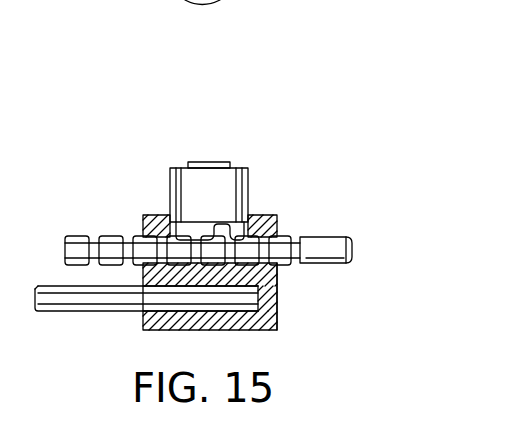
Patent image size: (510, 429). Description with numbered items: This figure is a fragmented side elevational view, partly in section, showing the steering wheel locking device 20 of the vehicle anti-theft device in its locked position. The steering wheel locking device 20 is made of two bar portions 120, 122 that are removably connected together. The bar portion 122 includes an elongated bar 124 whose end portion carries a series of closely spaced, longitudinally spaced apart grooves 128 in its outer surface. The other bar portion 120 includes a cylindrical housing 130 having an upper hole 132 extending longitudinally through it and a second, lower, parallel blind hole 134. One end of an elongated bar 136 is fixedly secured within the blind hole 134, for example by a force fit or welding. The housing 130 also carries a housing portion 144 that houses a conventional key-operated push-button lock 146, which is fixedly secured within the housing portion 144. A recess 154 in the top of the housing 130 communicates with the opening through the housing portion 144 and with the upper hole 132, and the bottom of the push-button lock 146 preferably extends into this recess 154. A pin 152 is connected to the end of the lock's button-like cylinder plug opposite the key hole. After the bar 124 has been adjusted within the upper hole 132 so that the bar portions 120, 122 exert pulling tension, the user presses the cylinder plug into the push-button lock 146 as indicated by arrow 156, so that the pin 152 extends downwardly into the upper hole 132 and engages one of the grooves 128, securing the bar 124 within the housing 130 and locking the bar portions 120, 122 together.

The steering wheel locking device 20 is at (298, 176).
The bar portion 120 is at (118, 180).
The bar portion 122 is at (330, 224).
The elongated bar 124 is at (326, 237).
The grooves 128 is at (122, 236).
The cylindrical housing 130 is at (281, 277).
The upper hole 132 is at (292, 236).
The blind hole 134 is at (240, 316).
The elongated bar 136 is at (76, 312).
The housing portion 144 is at (250, 178).
The push-button lock 146 is at (188, 182).
The pin 152 is at (193, 227).
The recess 154 is at (243, 210).
The arrow 156 is at (208, 148).